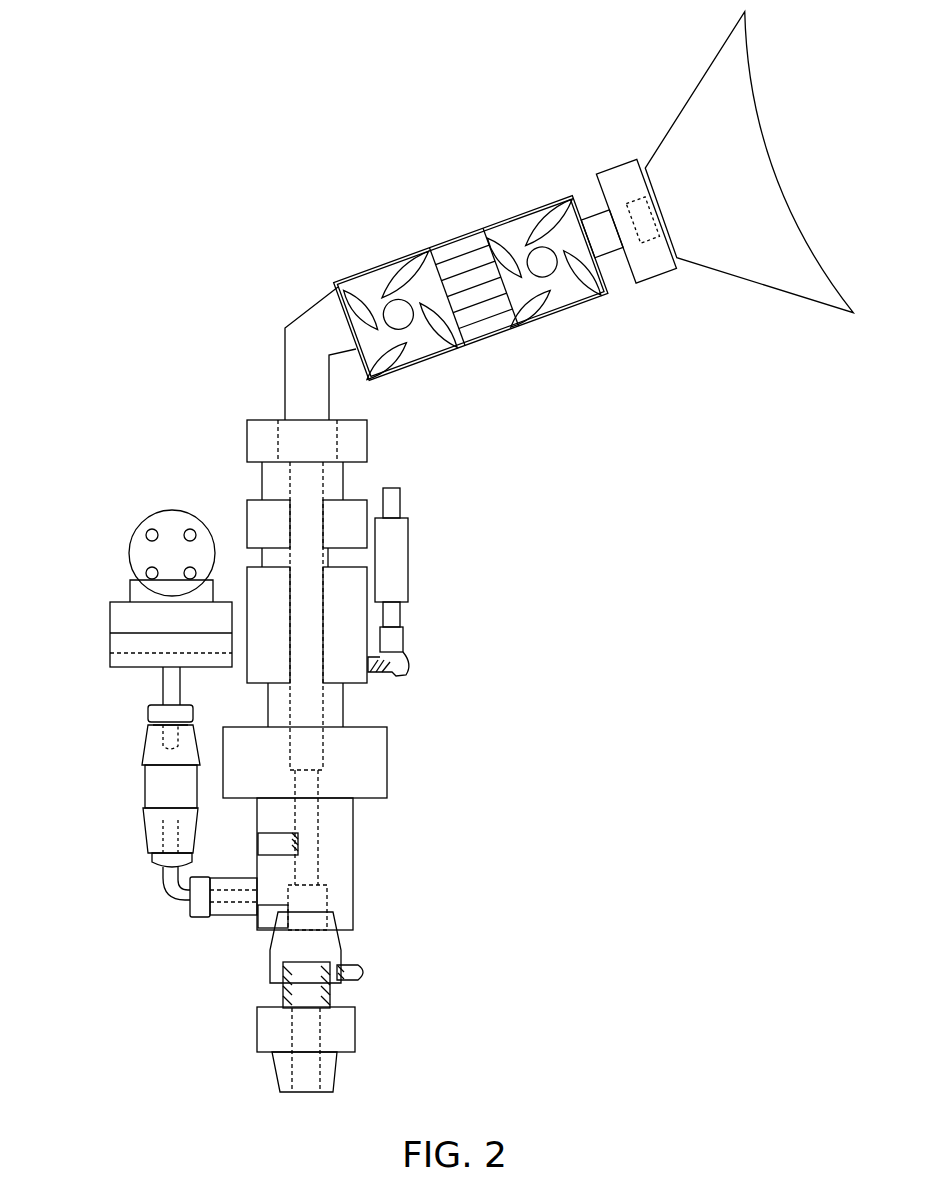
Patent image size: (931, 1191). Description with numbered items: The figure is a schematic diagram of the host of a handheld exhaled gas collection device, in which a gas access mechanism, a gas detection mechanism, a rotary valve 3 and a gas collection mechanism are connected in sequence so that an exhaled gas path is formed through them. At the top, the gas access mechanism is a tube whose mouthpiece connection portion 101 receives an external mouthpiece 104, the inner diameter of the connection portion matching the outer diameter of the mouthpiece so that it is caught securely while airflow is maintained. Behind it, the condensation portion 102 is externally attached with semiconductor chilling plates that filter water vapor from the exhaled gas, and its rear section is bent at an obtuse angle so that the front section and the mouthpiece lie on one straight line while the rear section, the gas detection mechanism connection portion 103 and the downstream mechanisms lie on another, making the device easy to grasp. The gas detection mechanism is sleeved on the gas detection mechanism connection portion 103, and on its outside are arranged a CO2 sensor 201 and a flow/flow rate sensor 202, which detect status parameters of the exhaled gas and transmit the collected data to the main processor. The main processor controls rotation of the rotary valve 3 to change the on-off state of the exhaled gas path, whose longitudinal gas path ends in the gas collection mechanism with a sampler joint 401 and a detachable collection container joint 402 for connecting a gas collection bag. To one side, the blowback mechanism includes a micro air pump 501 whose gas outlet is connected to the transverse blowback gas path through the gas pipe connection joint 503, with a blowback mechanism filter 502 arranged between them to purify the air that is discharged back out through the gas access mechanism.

The mouthpiece connection portion 101 is at (561, 201).
The condensation portion 102 is at (453, 277).
The gas detection mechanism connection portion 103 is at (248, 362).
The mouthpiece 104 is at (722, 187).
The CO2 sensor 201 is at (460, 527).
The flow/flow rate sensor 202 is at (460, 604).
The rotary valve 3 is at (376, 696).
The sampler joint 401 is at (359, 945).
The collection container joint 402 is at (383, 1022).
The micro air pump 501 is at (136, 588).
The blowback mechanism filter 502 is at (121, 767).
The gas pipe connection joint 503 is at (151, 922).